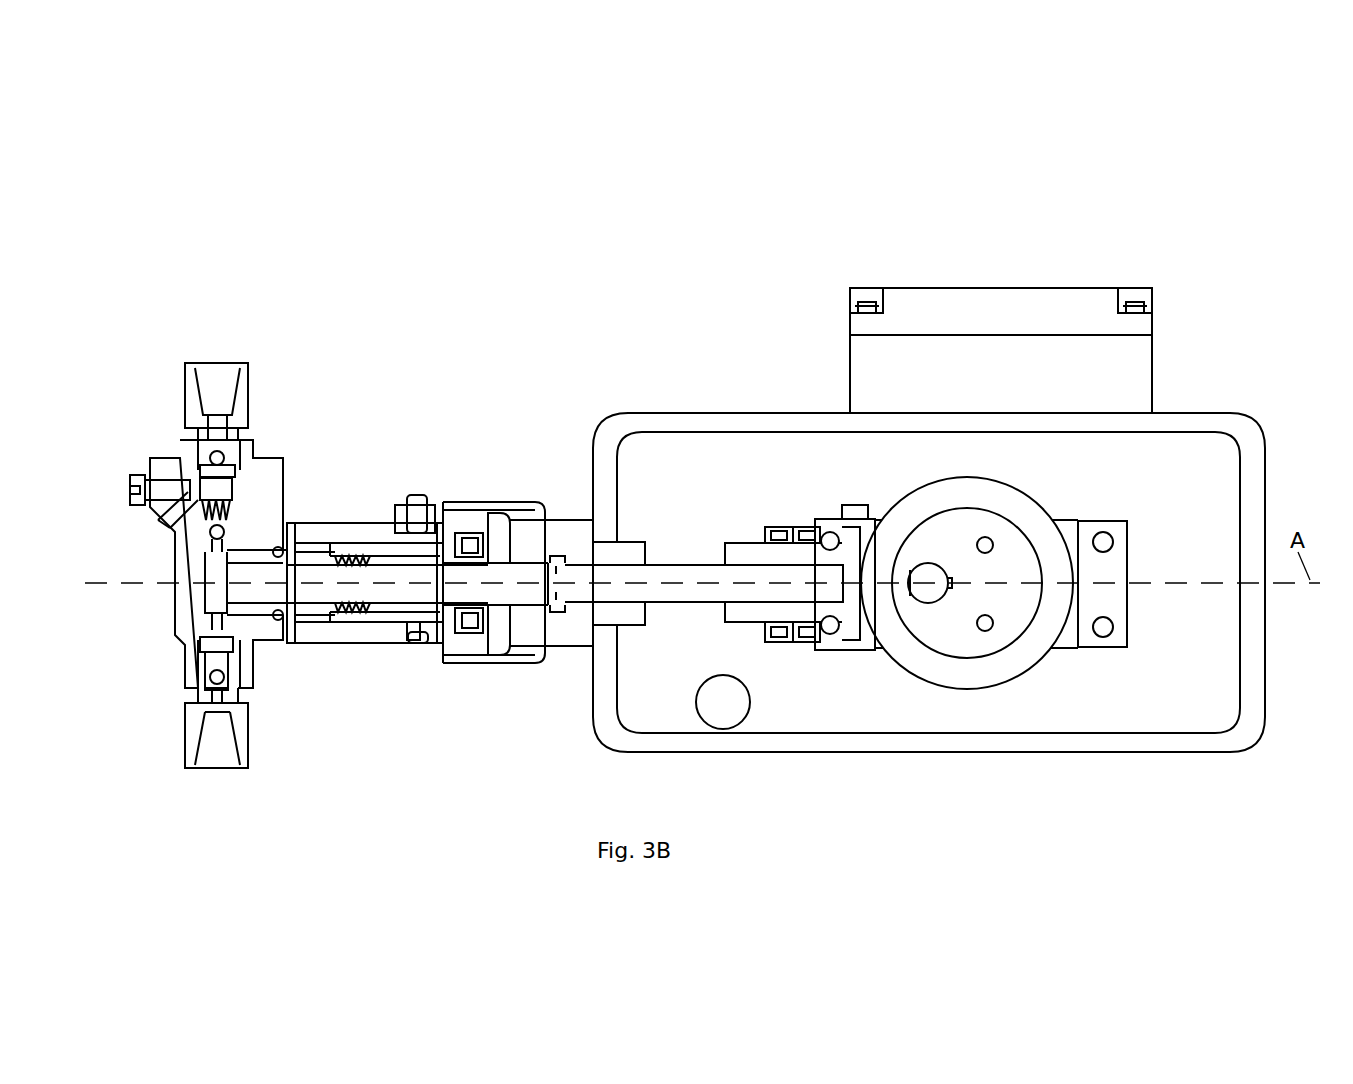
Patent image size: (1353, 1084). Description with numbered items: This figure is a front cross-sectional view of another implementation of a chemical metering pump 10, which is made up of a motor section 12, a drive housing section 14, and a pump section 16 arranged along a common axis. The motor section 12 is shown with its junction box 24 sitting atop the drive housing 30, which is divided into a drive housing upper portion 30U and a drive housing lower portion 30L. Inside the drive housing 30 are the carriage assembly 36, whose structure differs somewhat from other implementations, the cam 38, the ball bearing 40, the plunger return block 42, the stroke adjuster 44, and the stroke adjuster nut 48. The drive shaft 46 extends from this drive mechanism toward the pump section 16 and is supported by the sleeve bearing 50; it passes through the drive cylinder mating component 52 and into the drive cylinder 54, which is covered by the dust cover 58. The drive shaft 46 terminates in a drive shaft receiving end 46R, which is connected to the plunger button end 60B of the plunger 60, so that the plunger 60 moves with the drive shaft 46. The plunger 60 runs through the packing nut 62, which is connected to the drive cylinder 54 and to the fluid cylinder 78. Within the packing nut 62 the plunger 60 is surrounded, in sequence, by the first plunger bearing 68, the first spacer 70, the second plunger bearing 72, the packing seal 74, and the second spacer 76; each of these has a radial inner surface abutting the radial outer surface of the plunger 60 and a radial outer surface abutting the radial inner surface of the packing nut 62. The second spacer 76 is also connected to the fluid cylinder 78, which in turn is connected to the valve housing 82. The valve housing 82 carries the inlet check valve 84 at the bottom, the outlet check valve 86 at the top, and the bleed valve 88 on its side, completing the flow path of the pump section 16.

The metering pump 10 is at (1190, 232).
The motor section 12 is at (840, 293).
The drive housing section 14 is at (1272, 750).
The pump section 16 is at (520, 760).
The junction box 24 is at (1048, 288).
The drive housing 30 is at (1255, 474).
The drive housing upper portion 30U is at (722, 413).
The drive housing lower portion 30L is at (1150, 752).
The carriage assembly 36 is at (848, 650).
The cam 38 is at (962, 637).
The ball bearing 40 is at (1013, 663).
The plunger return block 42 is at (1110, 560).
The stroke adjuster 44 is at (860, 640).
The drive shaft 46 is at (696, 565).
The drive shaft receiving end 46R is at (560, 560).
The stroke adjuster nut 48 is at (790, 527).
The sleeve bearing 50 is at (640, 617).
The drive cylinder mating component 52 is at (632, 625).
The drive cylinder 54 is at (562, 535).
The dust cover 58 is at (458, 505).
The plunger 60 is at (506, 555).
The plunger button end 60B is at (560, 615).
The packing nut 62 is at (430, 495).
The first plunger bearing 68 is at (462, 634).
The first spacer 70 is at (432, 640).
The second plunger bearing 72 is at (394, 625).
The packing seal 74 is at (359, 625).
The second spacer 76 is at (306, 625).
The fluid cylinder 78 is at (305, 521).
The valve housing 82 is at (175, 558).
The inlet check valve 84 is at (170, 735).
The outlet check valve 86 is at (178, 388).
The bleed valve 88 is at (122, 478).